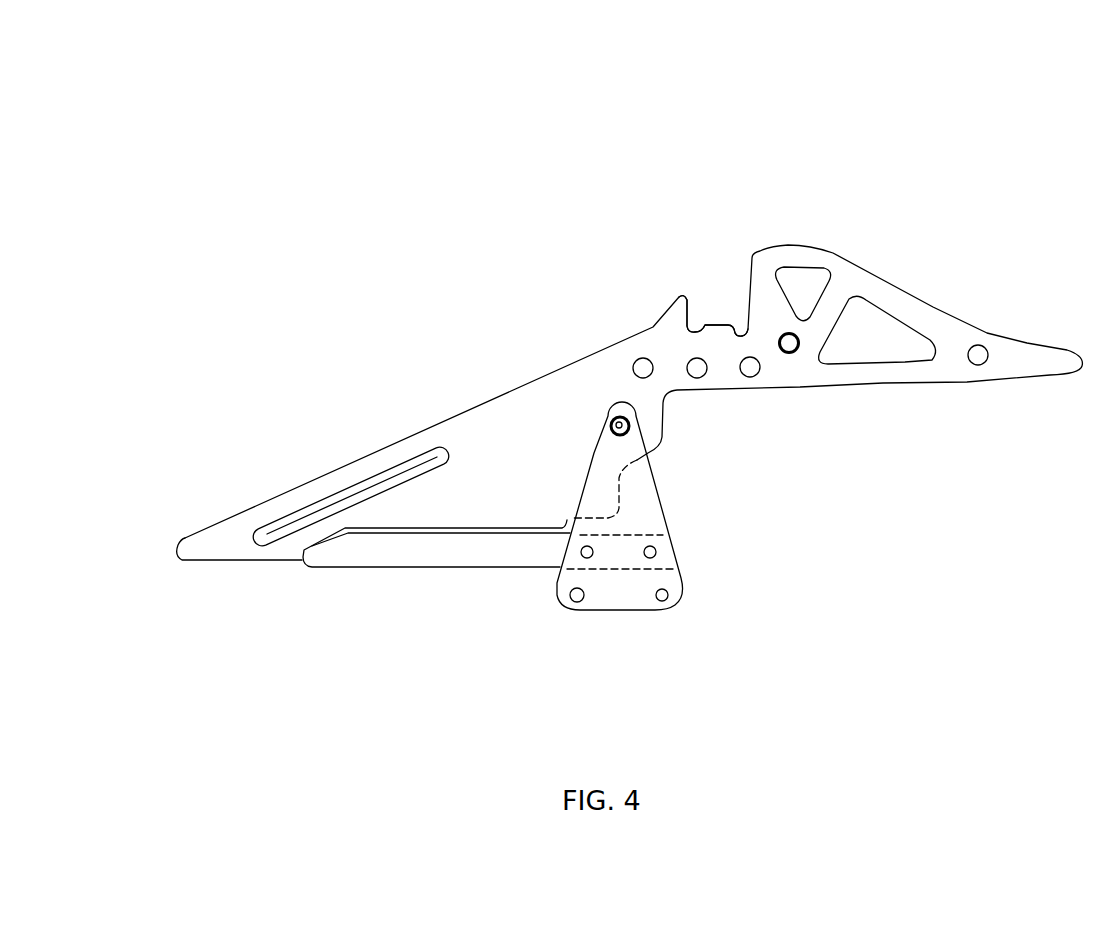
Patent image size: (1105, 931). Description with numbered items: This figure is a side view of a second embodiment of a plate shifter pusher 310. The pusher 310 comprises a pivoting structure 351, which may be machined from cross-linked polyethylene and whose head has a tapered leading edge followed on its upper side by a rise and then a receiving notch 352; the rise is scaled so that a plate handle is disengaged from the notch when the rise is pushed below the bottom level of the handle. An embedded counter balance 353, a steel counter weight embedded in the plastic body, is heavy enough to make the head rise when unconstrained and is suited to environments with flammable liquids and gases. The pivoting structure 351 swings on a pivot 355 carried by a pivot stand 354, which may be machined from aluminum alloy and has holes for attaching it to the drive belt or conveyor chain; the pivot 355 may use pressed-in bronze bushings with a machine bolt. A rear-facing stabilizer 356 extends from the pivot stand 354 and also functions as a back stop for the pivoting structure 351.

The pusher 310 is at (312, 124).
The pivoting structure 351 is at (912, 312).
The receiving notch 352 is at (710, 280).
The embedded counter balance 353 is at (390, 477).
The pivot stand 354 is at (645, 517).
The pivot 355 is at (610, 423).
The rear-facing stabilizer 356 is at (392, 552).